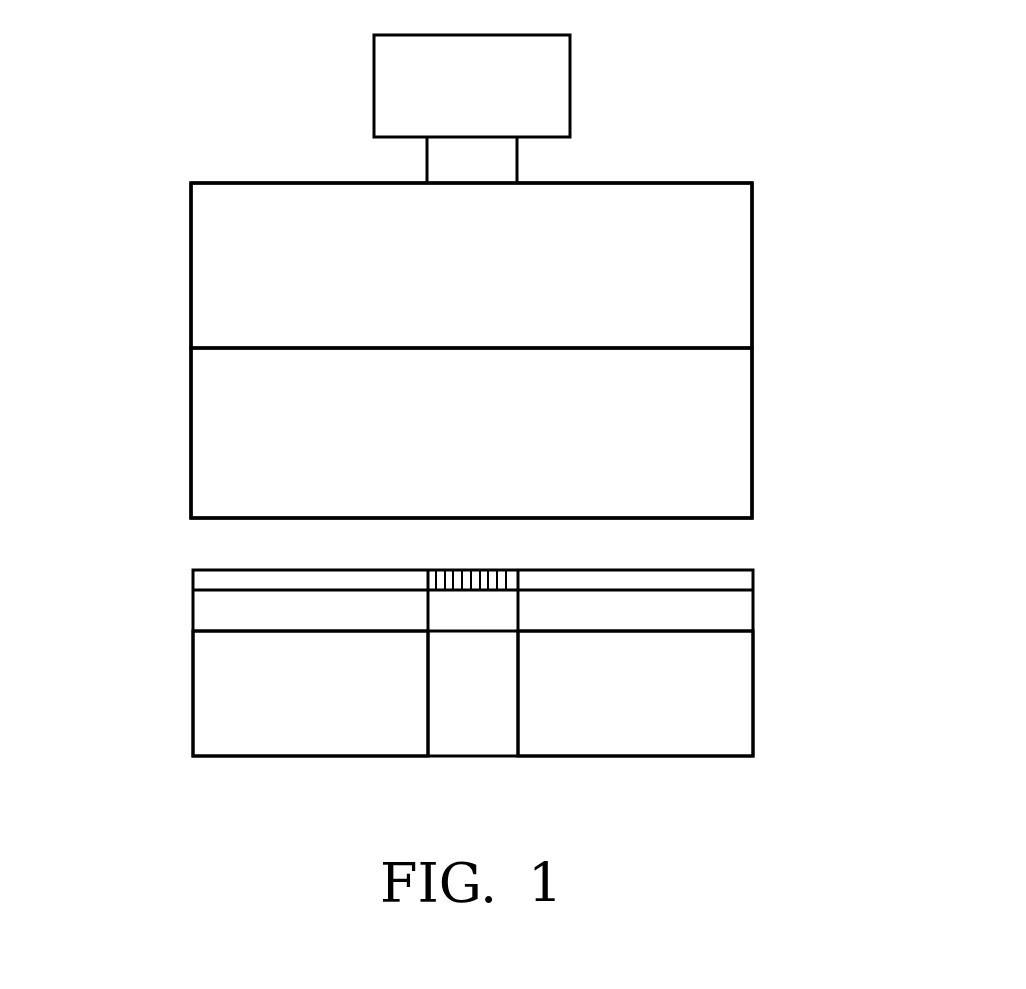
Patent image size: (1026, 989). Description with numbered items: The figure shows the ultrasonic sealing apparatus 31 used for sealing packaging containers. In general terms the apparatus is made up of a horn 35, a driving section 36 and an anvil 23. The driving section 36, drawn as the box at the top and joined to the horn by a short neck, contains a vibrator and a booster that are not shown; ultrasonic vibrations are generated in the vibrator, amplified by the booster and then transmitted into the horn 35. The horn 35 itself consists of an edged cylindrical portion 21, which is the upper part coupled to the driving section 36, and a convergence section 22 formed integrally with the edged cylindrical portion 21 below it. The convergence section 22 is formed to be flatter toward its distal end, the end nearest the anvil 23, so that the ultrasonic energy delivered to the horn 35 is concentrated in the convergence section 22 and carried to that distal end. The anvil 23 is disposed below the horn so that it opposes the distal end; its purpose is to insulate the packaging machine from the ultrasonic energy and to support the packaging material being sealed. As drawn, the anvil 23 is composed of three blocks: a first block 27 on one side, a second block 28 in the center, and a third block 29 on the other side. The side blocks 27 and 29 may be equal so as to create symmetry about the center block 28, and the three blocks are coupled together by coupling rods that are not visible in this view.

The ultrasonic sealing apparatus 31 is at (781, 133).
The driving section 36 is at (557, 82).
The horn 35 is at (770, 347).
The edged cylindrical portion 21 is at (754, 260).
The convergence section 22 is at (754, 452).
The anvil 23 is at (767, 600).
The first block 27 is at (193, 687).
The third block 29 is at (757, 715).
The second block 28 is at (465, 757).